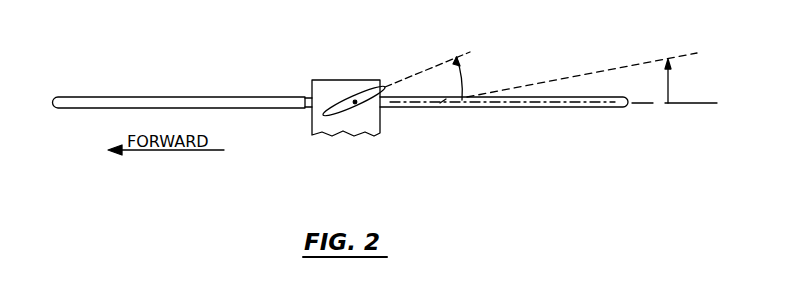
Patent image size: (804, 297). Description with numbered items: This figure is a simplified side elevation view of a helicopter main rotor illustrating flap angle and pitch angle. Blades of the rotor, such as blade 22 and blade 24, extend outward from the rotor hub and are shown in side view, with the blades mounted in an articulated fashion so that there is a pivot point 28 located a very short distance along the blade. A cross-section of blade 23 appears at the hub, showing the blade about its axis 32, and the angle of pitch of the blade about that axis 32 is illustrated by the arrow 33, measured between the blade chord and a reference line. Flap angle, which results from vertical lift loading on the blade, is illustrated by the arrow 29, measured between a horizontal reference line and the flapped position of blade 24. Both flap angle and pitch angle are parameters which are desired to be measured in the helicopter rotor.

The blade 22 is at (185, 97).
The blade 23 is at (346, 105).
The blade 24 is at (567, 97).
The pivot point 28 is at (442, 103).
The flap angle arrow 29 is at (668, 80).
The blade axis 32 is at (355, 106).
The pitch angle arrow 33 is at (461, 79).